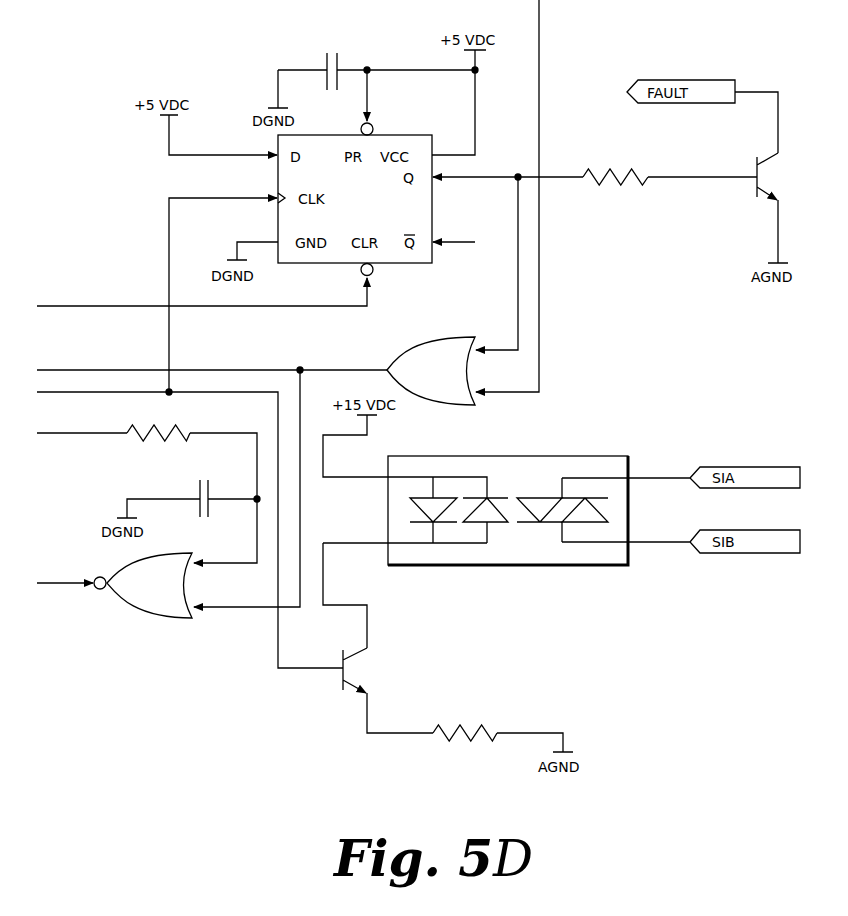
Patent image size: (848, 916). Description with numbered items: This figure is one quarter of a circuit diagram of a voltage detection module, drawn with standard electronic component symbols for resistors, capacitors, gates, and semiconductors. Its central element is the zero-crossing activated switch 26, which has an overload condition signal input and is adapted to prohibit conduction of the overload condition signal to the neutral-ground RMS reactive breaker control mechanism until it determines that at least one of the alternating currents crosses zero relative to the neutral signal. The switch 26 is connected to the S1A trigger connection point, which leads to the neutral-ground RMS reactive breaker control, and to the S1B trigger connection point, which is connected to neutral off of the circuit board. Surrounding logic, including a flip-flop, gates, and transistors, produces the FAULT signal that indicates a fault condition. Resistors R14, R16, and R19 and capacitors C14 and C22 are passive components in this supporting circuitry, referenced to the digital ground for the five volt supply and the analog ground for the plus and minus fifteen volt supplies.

The zero-crossing activated switch 26 is at (582, 456).
The resistor R14 1K R14 is at (615, 178).
The resistor R16 2K R16 is at (464, 735).
The resistor R19 1K R19 is at (157, 420).
The capacitor C14 0.1 uF C14 is at (319, 69).
The capacitor C22 0.1 uF C22 is at (210, 501).